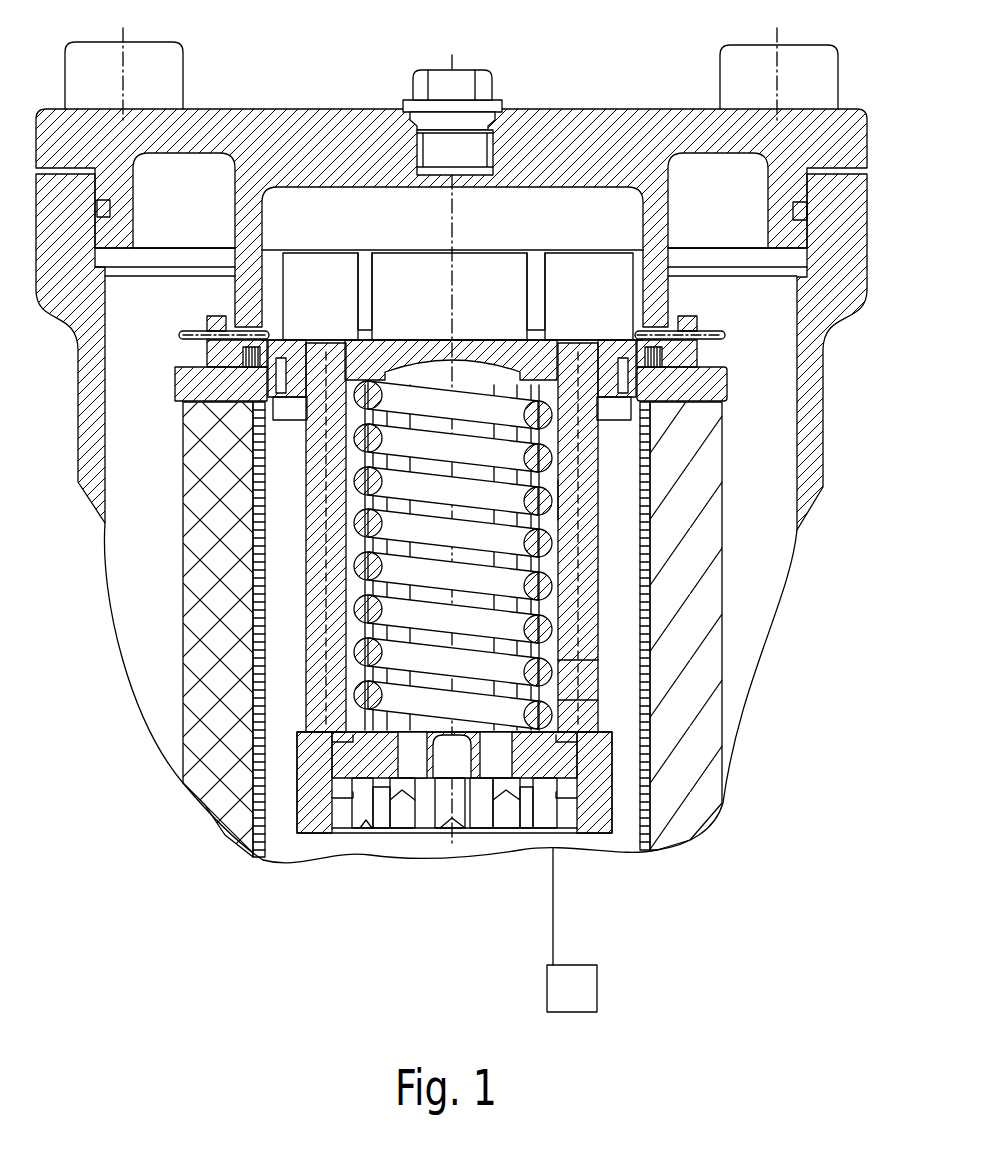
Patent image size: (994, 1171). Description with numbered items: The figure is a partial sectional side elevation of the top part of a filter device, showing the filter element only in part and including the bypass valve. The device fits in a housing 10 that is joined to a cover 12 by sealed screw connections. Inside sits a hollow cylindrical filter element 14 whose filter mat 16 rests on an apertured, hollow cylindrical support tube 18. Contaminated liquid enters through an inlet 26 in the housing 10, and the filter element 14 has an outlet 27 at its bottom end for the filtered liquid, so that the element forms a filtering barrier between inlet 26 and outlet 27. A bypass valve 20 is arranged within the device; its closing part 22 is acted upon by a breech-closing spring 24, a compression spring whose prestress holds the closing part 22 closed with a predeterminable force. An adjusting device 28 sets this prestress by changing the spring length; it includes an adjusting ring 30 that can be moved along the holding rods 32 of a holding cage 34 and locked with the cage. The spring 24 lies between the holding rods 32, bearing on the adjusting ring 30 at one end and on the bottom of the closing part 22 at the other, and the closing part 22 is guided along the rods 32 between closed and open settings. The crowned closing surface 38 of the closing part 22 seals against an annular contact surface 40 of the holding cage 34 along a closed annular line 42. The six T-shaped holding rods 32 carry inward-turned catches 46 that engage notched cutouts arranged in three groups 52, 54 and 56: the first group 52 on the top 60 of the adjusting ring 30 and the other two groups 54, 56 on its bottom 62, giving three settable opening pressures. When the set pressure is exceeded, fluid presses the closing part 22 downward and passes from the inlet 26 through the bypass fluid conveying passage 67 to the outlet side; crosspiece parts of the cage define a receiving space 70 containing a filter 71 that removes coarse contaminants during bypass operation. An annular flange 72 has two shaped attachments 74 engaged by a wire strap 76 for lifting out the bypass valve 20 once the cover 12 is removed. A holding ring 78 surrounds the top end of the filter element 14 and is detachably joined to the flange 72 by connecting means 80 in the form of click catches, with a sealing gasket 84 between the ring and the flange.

The housing 10 is at (846, 224).
The cover 12 is at (830, 148).
The filter element 14 is at (710, 560).
The filter mat 16 is at (690, 607).
The support tube 18 is at (653, 662).
The bypass valve 20 is at (318, 338).
The closing part 22 is at (402, 340).
The breech-closing spring 24 is at (420, 403).
The inlet 26 is at (100, 540).
The outlet 27 is at (562, 1000).
The adjusting device 28 is at (653, 833).
The adjusting ring 30 is at (605, 735).
The holding rods 32 is at (323, 624).
The holding cage 34 is at (586, 497).
The closing surface 38 is at (487, 345).
The annular contact surface 40 is at (573, 335).
The closed annular line 42 is at (551, 340).
The catches 46 is at (327, 833).
The first group 52 is at (588, 678).
The second group 54 is at (402, 840).
The third group 56 is at (372, 837).
The top 60 is at (393, 730).
The bottom 62 is at (428, 835).
The bypass fluid conveying passage 67 is at (347, 217).
The receiving space 70 is at (487, 277).
The filter 71 is at (416, 338).
The annular flange 72 is at (207, 350).
The shaped attachments 74 is at (207, 314).
The wire strap 76 is at (195, 333).
The holding ring 78 is at (727, 384).
The connecting means 80 is at (277, 335).
The sealing gasket 84 is at (608, 415).